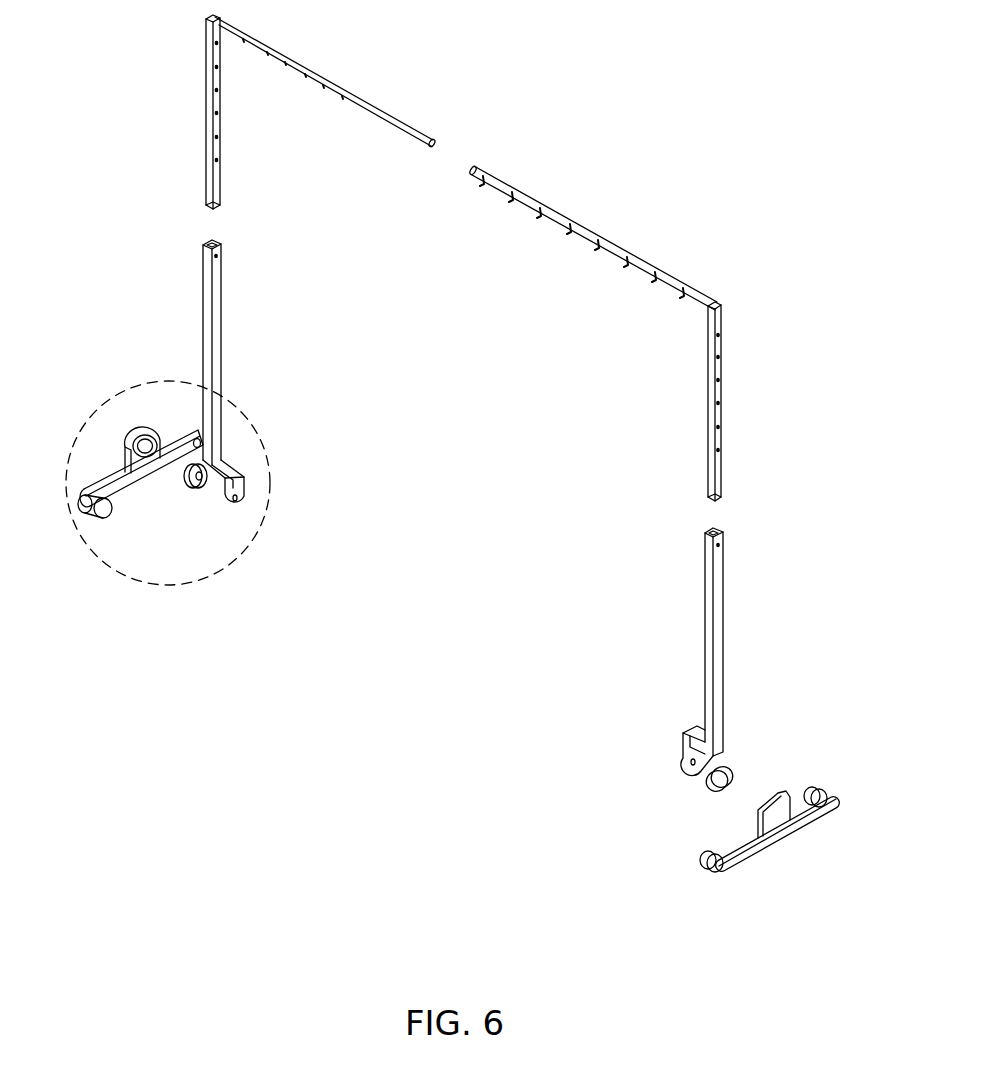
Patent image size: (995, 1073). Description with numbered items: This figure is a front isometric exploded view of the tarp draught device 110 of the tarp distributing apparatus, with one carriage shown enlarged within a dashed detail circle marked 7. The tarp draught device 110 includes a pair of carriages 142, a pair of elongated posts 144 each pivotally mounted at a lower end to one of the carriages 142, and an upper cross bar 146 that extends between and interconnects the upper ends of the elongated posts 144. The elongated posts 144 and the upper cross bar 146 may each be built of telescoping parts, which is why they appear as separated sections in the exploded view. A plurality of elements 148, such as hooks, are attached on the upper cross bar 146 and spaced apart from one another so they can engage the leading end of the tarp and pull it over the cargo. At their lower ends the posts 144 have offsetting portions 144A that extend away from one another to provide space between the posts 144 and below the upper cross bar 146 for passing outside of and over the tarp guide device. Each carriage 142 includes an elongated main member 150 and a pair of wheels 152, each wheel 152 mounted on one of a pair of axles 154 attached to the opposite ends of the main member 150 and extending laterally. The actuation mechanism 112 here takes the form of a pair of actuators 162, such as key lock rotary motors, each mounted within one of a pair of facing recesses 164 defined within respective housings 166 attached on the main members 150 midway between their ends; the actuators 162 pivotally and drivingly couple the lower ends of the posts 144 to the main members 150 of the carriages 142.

The tarp draught device 110 is at (634, 190).
The elongated posts 144 is at (238, 117).
The upper cross bar 146 is at (345, 115).
The elements 148 is at (541, 217).
The offsetting portions 144A is at (236, 470).
The detail view reference 7 is at (283, 402).
The elongated main member 150 is at (95, 478).
The wheels 152 is at (186, 480).
The axles 154 is at (196, 432).
The actuators 162 is at (194, 490).
The facing recesses 164 is at (137, 438).
The housings 166 is at (126, 442).
The carriages 142 is at (143, 510).
The actuation mechanism 112 is at (204, 518).